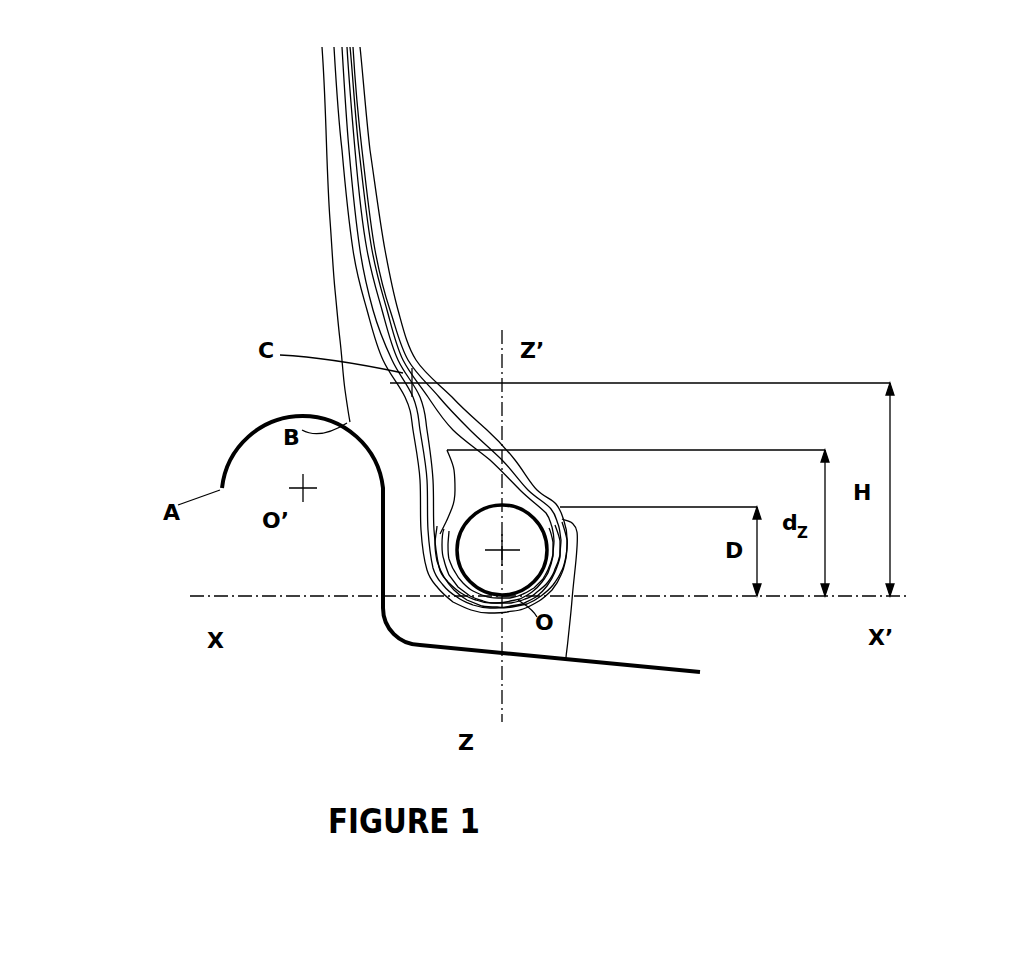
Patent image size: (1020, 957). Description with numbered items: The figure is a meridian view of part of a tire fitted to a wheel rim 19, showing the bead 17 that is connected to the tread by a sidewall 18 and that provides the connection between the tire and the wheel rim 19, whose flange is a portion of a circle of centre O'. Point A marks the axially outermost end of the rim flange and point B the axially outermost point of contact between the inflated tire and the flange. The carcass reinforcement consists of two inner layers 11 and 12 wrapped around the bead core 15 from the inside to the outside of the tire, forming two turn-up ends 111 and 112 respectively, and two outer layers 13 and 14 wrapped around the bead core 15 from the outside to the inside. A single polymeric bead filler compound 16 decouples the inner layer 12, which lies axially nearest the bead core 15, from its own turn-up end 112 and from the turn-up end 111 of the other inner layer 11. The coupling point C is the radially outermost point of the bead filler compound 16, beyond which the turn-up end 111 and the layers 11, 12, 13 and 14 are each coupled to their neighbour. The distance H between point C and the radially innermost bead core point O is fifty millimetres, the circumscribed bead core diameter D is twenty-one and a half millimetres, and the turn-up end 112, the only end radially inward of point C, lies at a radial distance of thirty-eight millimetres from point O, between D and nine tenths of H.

The inner layer 11 is at (353, 98).
The inner layer 12 is at (358, 170).
The outer layer 13 is at (347, 64).
The outer layer 14 is at (337, 131).
The bead core 15 is at (487, 573).
The polymeric bead filler compound 16 is at (483, 488).
The bead 17 is at (565, 521).
The sidewall 18 is at (327, 195).
The wheel rim 19 is at (256, 424).
The turn-up end 111 is at (380, 317).
The turn-up end 112 is at (449, 443).